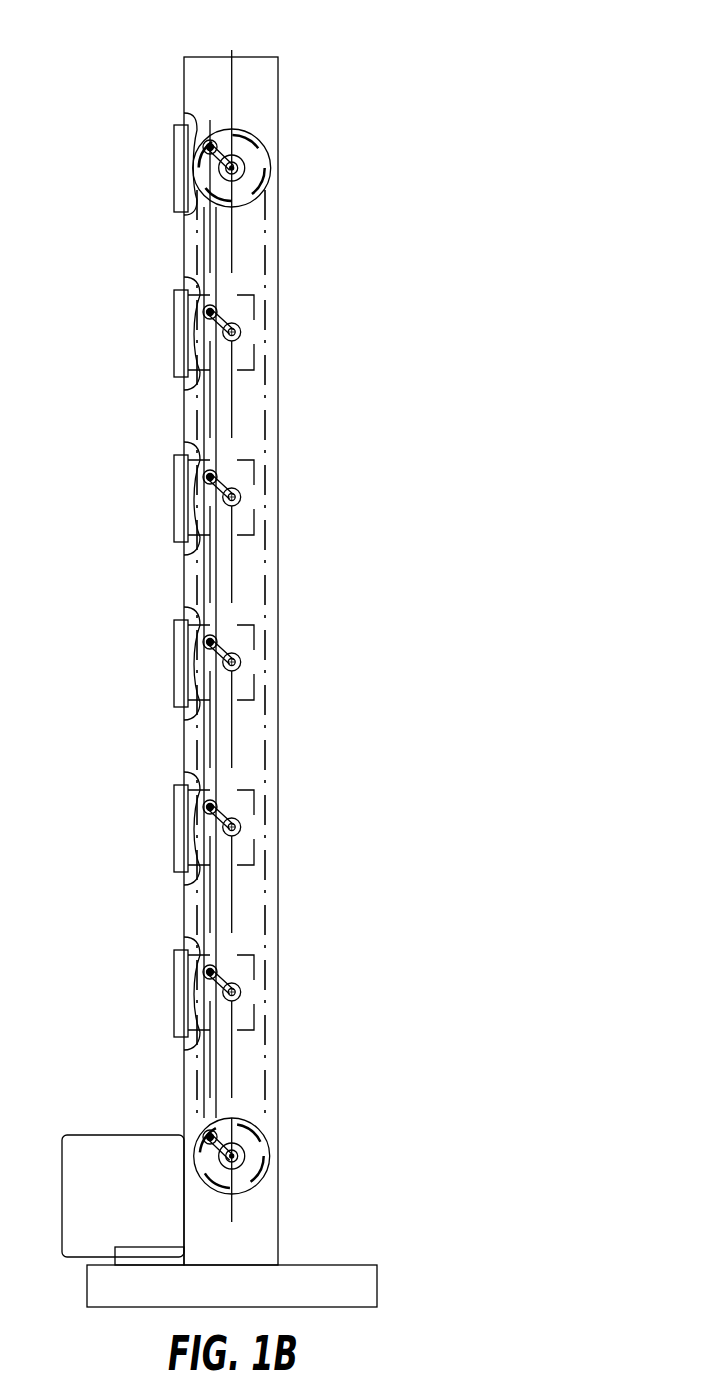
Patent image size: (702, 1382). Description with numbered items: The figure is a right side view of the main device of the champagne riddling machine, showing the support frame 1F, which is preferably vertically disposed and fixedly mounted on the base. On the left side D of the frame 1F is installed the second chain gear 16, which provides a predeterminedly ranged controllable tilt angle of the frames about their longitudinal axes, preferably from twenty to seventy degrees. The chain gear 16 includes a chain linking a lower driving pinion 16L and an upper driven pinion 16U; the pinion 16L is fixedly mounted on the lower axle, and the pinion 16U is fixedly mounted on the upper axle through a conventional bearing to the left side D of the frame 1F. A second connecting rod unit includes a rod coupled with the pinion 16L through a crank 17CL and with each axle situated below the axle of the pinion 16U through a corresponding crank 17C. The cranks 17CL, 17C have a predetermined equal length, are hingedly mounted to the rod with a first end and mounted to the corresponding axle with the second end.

The support frame 1F is at (257, 1233).
The left side of the frame D is at (232, 141).
The second chain gear 16 is at (267, 508).
The upper pinion 16U is at (265, 173).
The lower pinion 16L is at (260, 1147).
The crank 17C is at (218, 983).
The crank 17CL is at (208, 1155).